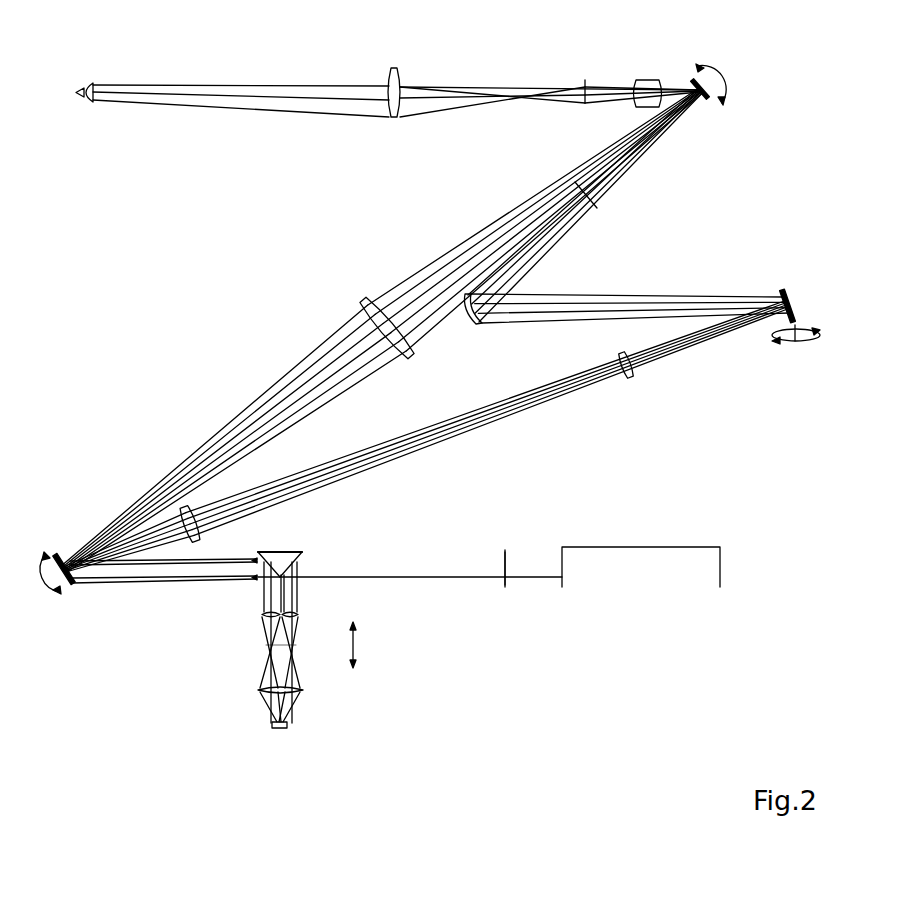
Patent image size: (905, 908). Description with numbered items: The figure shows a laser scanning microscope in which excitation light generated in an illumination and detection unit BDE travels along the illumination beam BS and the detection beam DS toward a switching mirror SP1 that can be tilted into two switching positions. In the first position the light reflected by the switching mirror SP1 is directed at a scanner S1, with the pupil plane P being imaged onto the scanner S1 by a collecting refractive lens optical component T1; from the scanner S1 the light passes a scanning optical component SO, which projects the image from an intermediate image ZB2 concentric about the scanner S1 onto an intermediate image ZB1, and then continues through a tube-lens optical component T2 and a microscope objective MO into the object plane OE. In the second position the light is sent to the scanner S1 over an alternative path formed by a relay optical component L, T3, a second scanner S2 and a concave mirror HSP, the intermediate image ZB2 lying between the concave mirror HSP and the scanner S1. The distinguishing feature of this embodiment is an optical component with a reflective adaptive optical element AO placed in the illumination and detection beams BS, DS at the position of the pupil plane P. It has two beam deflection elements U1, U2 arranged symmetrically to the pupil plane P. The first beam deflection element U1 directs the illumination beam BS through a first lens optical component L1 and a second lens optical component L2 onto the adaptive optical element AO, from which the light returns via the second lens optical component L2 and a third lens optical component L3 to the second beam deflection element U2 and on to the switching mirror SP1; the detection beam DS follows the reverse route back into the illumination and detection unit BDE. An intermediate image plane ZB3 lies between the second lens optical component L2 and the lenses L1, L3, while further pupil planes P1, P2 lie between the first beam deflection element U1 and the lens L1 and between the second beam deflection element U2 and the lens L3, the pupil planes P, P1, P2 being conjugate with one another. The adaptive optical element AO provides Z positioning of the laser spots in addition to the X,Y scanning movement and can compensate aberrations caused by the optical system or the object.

The microscope objective MO is at (88, 83).
The object plane OE is at (78, 95).
The tube-lens optical component T2 is at (391, 77).
The intermediate image ZB1 is at (583, 83).
The scanning optical component SO is at (665, 62).
The scanner S1 is at (719, 77).
The intermediate image ZB2 is at (575, 182).
The collecting refractive lens optical component T1 is at (376, 316).
The concave mirror HSP is at (485, 327).
The scanner S2 is at (796, 303).
The relay optical component T3 is at (642, 378).
The relay optical component L is at (196, 508).
The switching mirror SP1 is at (61, 588).
The second beam deflection element U2 is at (260, 553).
The pupil plane P is at (280, 572).
The first beam deflection element U1 is at (298, 553).
The pupil plane P2 is at (268, 582).
The pupil plane P1 is at (290, 581).
The third lens optical component L3 is at (264, 615).
The first lens optical component L1 is at (296, 615).
The intermediate image plane ZB3 is at (270, 646).
The second lens optical component L2 is at (300, 690).
The reflective adaptive optical element AO is at (272, 726).
The illumination beam BS is at (415, 567).
The detection beam DS is at (488, 550).
The illumination and detection unit BDE is at (641, 567).